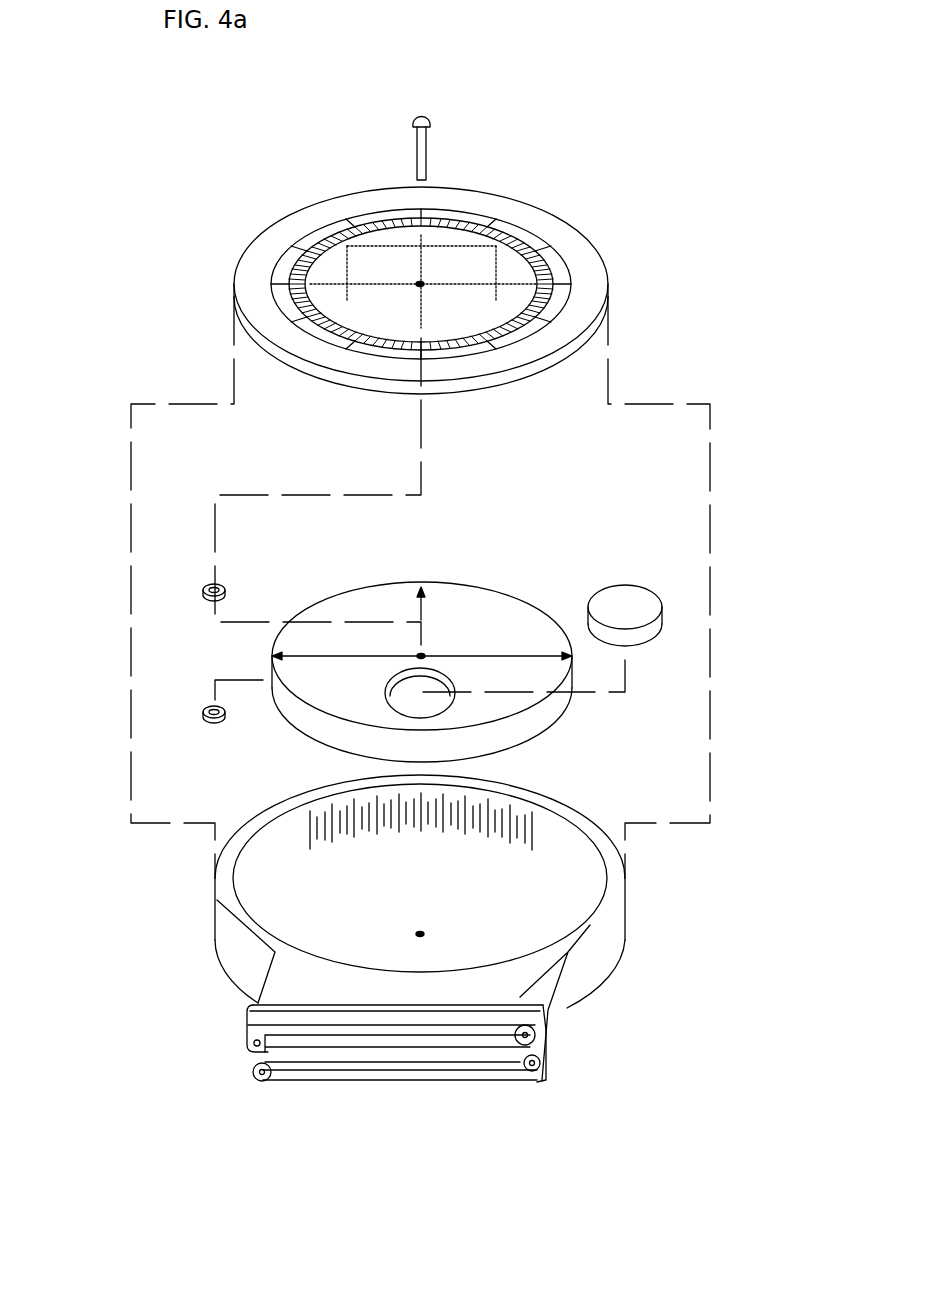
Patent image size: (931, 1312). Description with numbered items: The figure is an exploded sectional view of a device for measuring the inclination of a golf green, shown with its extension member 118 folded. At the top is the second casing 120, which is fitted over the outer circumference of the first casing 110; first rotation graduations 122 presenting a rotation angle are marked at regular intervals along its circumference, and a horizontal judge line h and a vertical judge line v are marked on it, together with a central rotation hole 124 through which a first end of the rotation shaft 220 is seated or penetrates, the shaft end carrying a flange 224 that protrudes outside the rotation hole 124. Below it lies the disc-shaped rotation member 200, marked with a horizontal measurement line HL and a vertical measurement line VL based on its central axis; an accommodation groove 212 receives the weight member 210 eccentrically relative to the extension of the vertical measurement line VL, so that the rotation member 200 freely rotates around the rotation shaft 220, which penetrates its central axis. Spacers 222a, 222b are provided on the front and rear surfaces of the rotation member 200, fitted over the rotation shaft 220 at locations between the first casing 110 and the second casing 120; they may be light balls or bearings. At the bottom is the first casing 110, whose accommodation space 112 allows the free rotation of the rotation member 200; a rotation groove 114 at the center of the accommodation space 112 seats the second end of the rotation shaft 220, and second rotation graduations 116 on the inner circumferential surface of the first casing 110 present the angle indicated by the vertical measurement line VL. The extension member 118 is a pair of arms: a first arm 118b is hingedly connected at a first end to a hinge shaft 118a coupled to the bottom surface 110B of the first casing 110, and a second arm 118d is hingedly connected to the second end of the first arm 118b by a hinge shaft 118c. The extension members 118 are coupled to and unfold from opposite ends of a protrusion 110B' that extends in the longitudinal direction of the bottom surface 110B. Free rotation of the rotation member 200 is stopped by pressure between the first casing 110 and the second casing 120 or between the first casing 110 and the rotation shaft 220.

The first casing 110 is at (203, 921).
The bottom surface 110B is at (205, 1042).
The protrusion 110B' is at (397, 1088).
The accommodation space 112 is at (562, 897).
The rotation groove 114 is at (426, 932).
The second rotation graduations 116 is at (540, 845).
The extension member 118 is at (500, 1008).
The hinge shaft 118a is at (540, 1080).
The first arm 118b is at (393, 1078).
The hinge shaft 118c is at (258, 1081).
The second arm 118d is at (320, 1068).
The second casing 120 is at (507, 201).
The first rotation graduations 122 is at (563, 275).
The rotation hole 124 is at (416, 283).
The rotation member 200 is at (517, 592).
The weight member 210 is at (607, 608).
The accommodation groove 212 is at (437, 703).
The rotation shaft 220 is at (428, 165).
The flange 224 is at (431, 118).
The spacer 222a is at (224, 584).
The spacer 222b is at (224, 720).
The horizontal judge line h is at (460, 245).
The vertical judge line v is at (497, 268).
The vertical measurement line VL is at (428, 603).
The horizontal measurement line HL is at (465, 657).